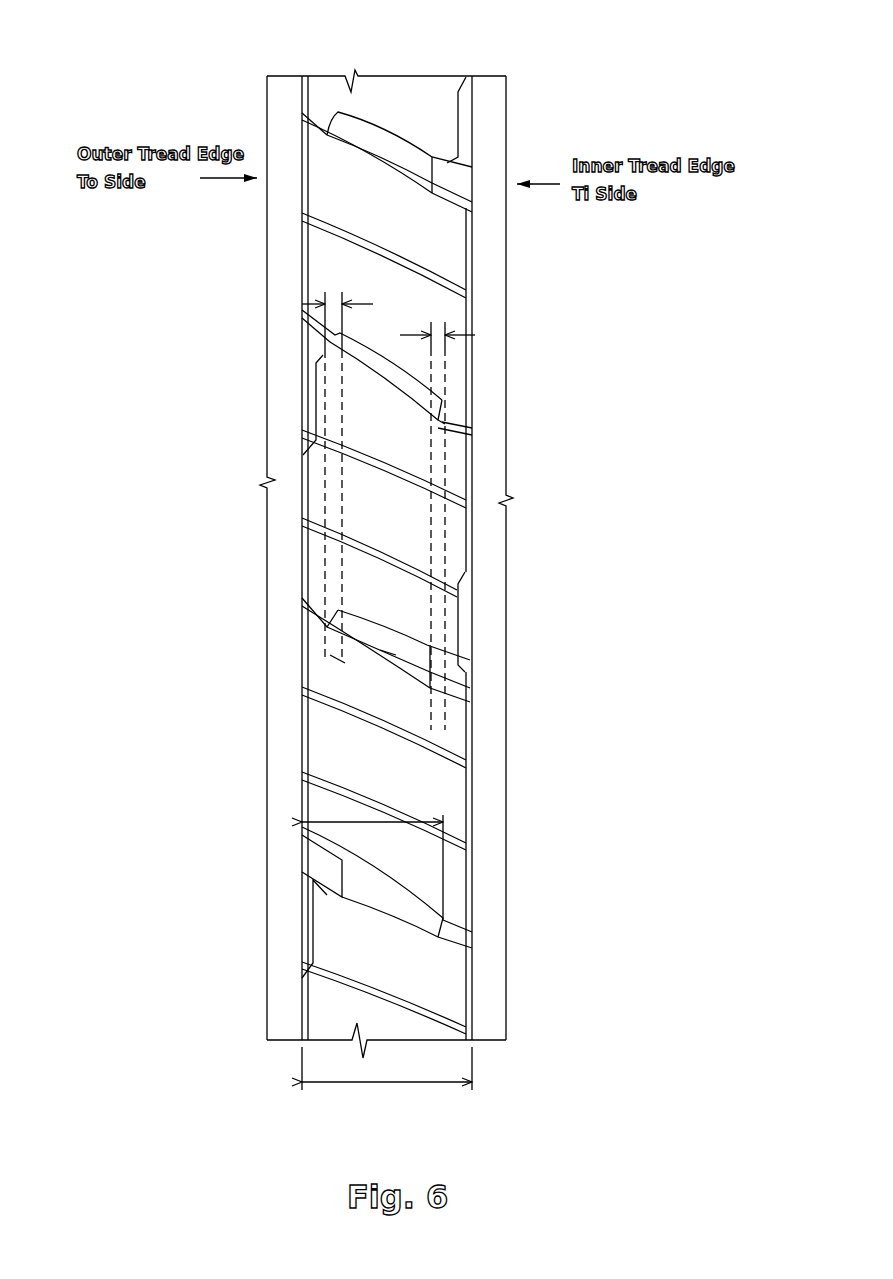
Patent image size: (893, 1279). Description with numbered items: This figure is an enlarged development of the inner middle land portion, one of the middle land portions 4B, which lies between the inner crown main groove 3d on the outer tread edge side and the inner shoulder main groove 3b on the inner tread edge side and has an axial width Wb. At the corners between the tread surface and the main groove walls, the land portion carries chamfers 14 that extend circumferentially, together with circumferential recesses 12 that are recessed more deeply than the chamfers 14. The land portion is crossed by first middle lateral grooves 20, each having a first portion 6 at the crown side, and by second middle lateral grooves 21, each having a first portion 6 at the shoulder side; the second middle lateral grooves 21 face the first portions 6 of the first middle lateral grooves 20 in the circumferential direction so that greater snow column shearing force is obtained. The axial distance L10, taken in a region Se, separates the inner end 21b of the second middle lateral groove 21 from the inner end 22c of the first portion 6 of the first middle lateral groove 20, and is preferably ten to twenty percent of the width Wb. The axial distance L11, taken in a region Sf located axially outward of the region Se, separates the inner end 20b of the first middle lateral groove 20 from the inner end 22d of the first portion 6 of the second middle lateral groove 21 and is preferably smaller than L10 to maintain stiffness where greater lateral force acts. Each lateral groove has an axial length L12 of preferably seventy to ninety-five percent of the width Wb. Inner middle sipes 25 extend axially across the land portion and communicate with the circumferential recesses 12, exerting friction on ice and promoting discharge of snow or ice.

The inner crown main groove 3d is at (286, 118).
The inner shoulder main groove 3b is at (488, 118).
The middle land portion 4B is at (397, 118).
The first portion 6 is at (315, 343).
The circumferential recess 12 is at (308, 943).
The chamfer 14 is at (303, 1010).
The first middle lateral groove 20 is at (388, 377).
The inner end of the first middle lateral groove 20b is at (442, 405).
The second middle lateral groove 21 is at (388, 692).
The inner end of the second middle lateral groove 21b is at (330, 622).
The inner end of the first portion of the first middle lateral groove 22c is at (355, 372).
The inner end of the first portion of the second middle lateral groove 22d is at (418, 650).
The inner middle sipe 25 is at (382, 993).
The region where distance L10 is taken Se is at (332, 665).
The region where distance L11 is taken Sf is at (388, 653).
The distance L10 is at (330, 302).
The distance L11 is at (440, 336).
The length L12 is at (337, 820).
The width of the inner middle land portion Wb is at (387, 1079).